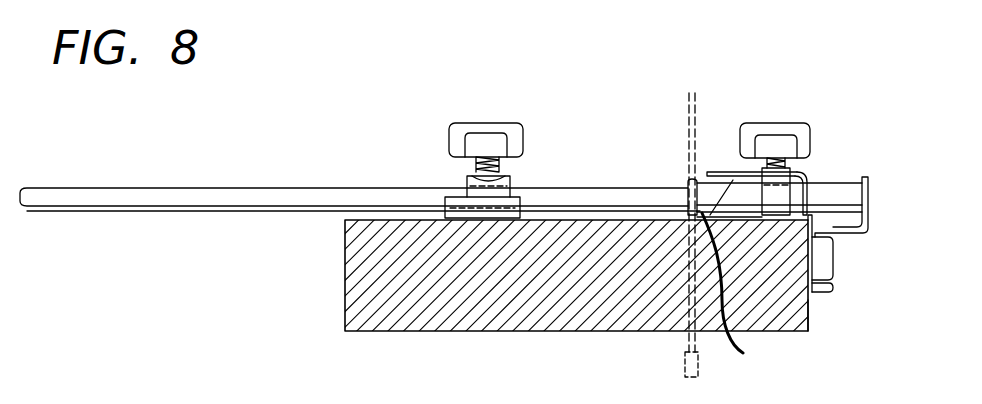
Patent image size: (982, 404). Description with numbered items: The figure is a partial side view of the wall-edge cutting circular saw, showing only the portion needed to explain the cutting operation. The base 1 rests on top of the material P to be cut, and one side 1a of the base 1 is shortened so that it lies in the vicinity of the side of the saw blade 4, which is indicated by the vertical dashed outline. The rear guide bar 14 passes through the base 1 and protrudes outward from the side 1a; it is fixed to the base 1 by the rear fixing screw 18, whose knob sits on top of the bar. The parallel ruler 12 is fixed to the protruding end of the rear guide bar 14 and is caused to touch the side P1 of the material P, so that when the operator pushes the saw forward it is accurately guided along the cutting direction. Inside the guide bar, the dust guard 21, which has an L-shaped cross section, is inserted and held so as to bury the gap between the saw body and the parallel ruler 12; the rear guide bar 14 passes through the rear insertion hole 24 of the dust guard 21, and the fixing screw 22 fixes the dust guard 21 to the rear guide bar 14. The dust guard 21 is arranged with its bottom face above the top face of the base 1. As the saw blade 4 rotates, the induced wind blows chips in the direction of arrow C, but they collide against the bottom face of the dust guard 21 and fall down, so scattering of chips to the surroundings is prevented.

The base 1 is at (594, 220).
The side of the base 1a is at (738, 291).
The saw blade 4 is at (688, 122).
The parallel ruler 12 is at (827, 258).
The rear guide bar 14 is at (218, 196).
The rear fixing screw 18 is at (487, 130).
The dust guard 21 is at (727, 170).
The fixing screw 22 is at (780, 127).
The rear insertion hole 24 is at (808, 178).
The arrow indicating chip direction C is at (747, 200).
The material to be cut P is at (488, 295).
The side of the material to be cut P1 is at (808, 310).